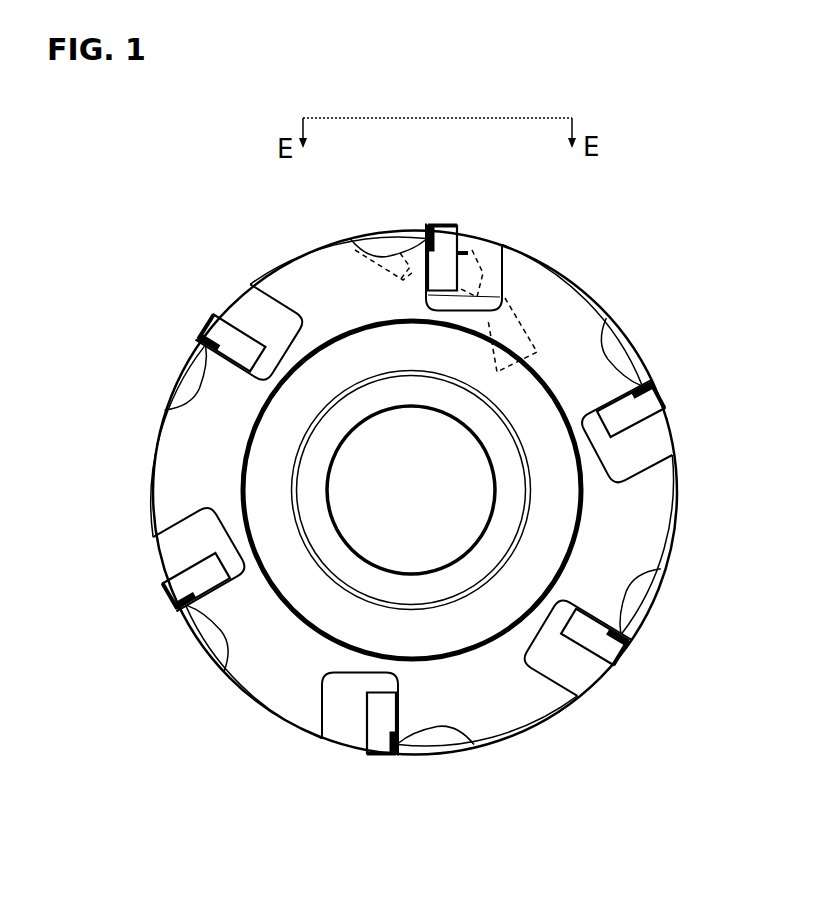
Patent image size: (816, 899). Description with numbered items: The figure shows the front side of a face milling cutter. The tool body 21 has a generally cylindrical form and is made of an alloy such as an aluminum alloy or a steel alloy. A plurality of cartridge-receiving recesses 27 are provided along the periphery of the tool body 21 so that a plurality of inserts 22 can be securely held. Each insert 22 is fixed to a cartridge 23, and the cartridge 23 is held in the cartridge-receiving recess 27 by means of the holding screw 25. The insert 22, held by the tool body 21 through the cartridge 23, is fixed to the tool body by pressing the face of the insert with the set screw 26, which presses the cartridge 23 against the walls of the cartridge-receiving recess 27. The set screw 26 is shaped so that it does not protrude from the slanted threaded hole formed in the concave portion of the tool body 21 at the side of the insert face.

The tool body 21 is at (593, 355).
The insert 22 is at (437, 257).
The cartridge 23 is at (420, 300).
The holding screw 25 is at (503, 327).
The set screw 26 is at (403, 273).
The cartridge-receiving recess 27 is at (503, 247).